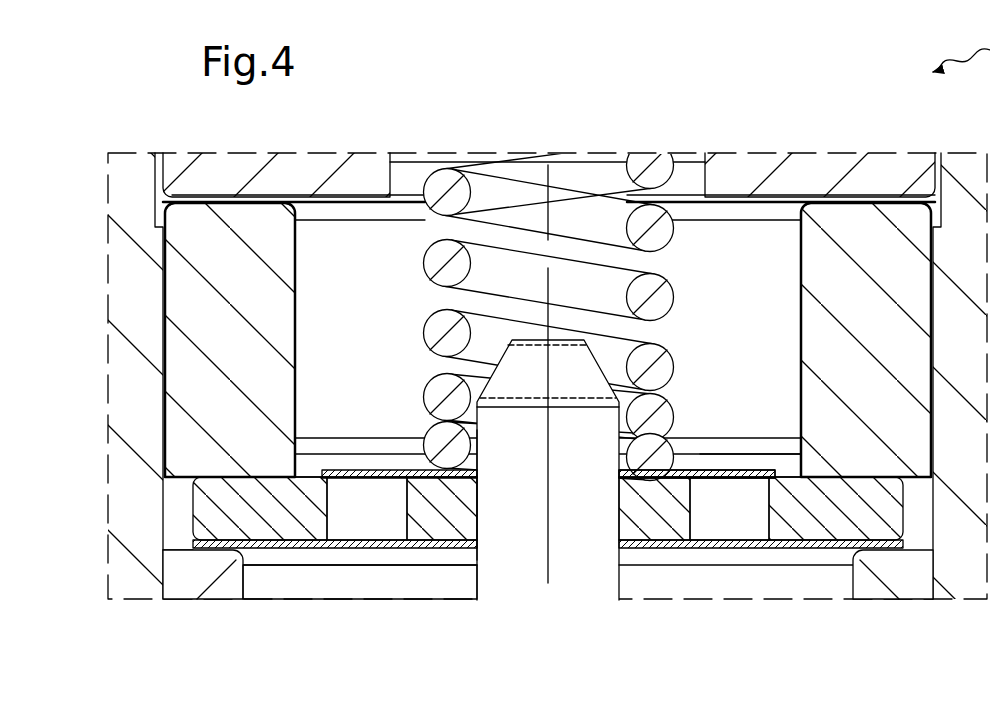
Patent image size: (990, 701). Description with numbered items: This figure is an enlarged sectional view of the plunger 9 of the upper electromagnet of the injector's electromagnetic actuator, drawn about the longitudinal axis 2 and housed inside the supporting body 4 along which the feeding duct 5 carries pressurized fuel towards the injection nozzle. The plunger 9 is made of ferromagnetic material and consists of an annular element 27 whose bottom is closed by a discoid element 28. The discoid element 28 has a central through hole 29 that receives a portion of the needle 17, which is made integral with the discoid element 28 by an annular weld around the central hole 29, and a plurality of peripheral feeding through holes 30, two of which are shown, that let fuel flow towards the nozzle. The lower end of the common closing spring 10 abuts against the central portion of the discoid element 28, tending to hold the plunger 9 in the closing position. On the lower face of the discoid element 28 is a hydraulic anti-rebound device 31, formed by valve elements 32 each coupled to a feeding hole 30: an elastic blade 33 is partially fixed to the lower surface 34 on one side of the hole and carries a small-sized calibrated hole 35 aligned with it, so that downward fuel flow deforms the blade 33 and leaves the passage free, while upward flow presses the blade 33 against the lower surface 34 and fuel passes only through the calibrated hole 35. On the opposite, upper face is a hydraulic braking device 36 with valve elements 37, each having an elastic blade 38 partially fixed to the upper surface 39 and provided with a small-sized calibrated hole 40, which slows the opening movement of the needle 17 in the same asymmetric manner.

The longitudinal axis 2 is at (549, 166).
The supporting body 4 is at (138, 170).
The feeding duct 5 is at (270, 590).
The plunger 9 is at (786, 236).
The closing spring 10 is at (653, 168).
The needle 17 is at (585, 570).
The annular element 27 is at (225, 327).
The discoid element 28 is at (210, 511).
The central through hole 29 is at (482, 500).
The peripheral feeding through holes 30 is at (389, 510).
The anti-rebound device 31 is at (447, 578).
The valve element 32 is at (342, 560).
The elastic blade 33 is at (228, 548).
The lower surface 34 is at (807, 548).
The small-sized calibrated hole 35 is at (366, 547).
The braking device 36 is at (337, 446).
The valve element 37 is at (387, 458).
The elastic blade 38 is at (687, 470).
The upper surface 39 is at (787, 470).
The small-sized calibrated hole 40 is at (368, 470).